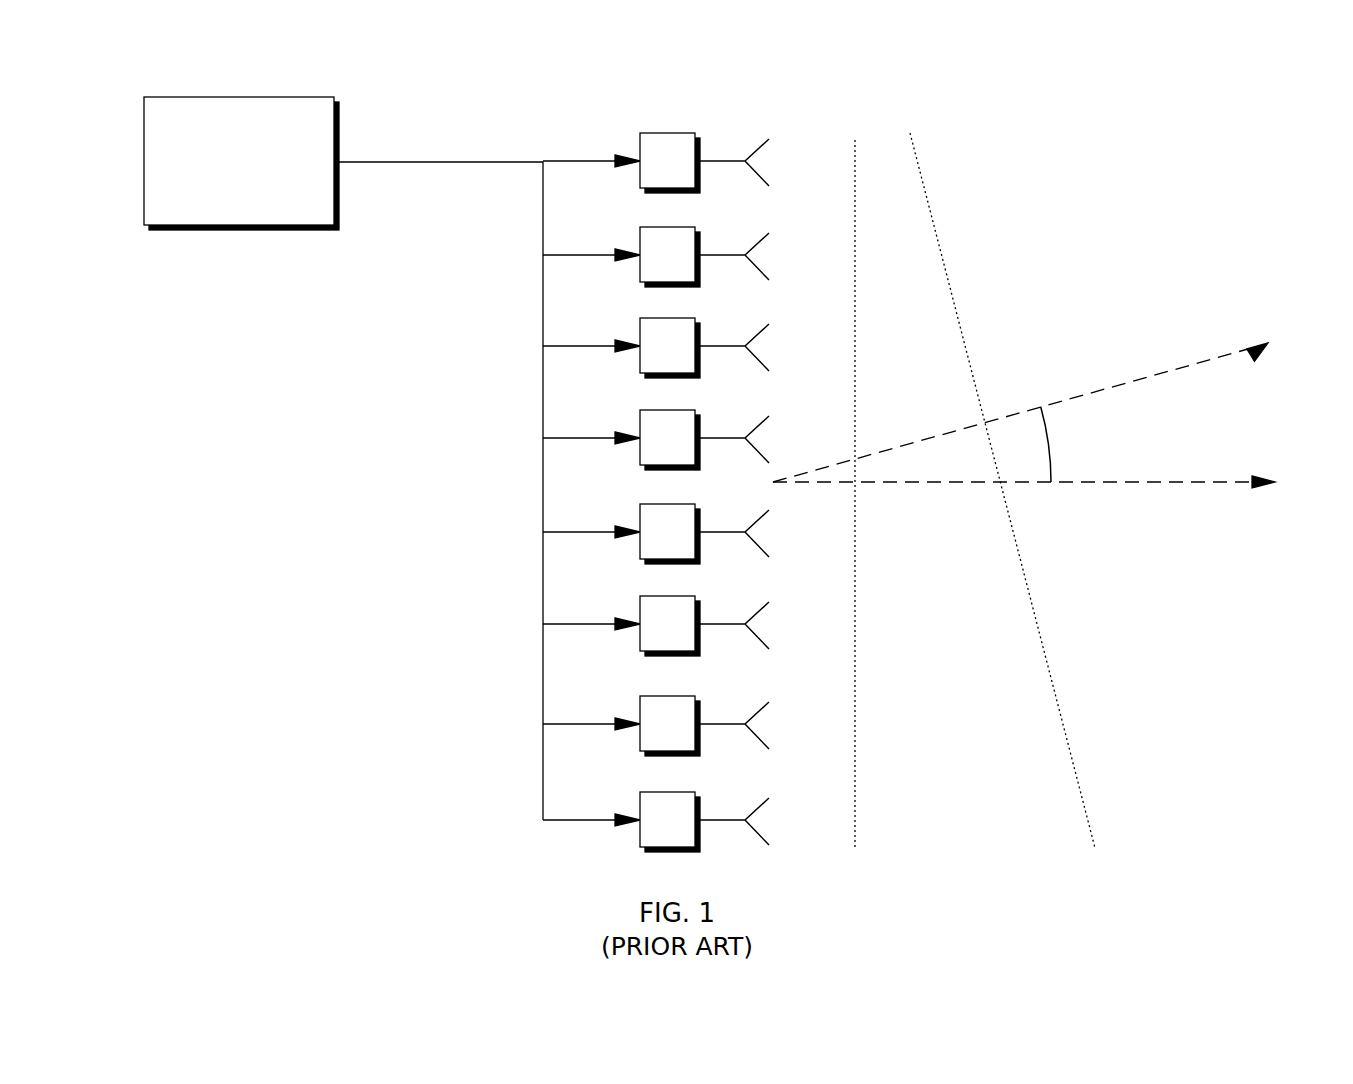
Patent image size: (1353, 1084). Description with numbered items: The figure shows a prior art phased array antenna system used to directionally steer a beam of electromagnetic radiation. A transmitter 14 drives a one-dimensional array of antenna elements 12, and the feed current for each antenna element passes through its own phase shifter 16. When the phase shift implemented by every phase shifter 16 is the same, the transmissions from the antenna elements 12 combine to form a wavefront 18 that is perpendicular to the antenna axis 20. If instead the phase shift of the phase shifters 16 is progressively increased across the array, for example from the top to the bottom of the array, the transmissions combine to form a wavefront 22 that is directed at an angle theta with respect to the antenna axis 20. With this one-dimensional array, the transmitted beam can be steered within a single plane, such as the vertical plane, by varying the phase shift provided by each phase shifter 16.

The antenna elements 12 is at (763, 145).
The transmitter 14 is at (172, 97).
The phase shifter 16 is at (640, 142).
The wavefront 18 is at (857, 772).
The antenna axis 20 is at (1180, 484).
The wavefront 22 is at (1040, 660).